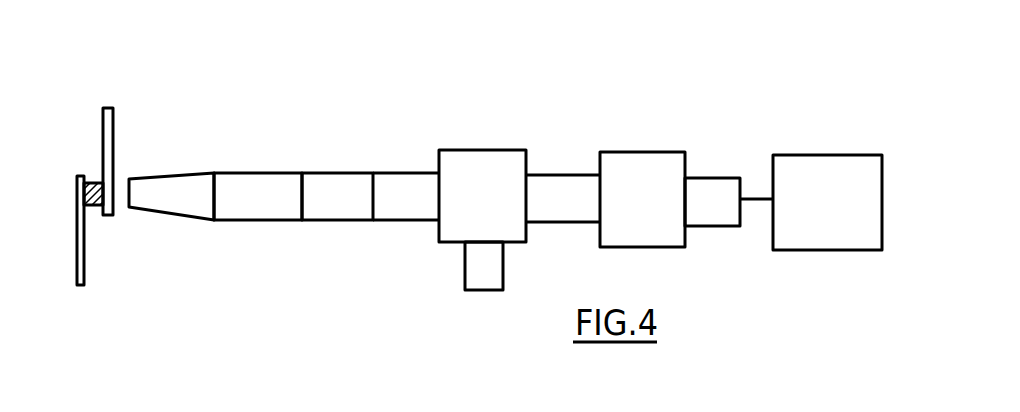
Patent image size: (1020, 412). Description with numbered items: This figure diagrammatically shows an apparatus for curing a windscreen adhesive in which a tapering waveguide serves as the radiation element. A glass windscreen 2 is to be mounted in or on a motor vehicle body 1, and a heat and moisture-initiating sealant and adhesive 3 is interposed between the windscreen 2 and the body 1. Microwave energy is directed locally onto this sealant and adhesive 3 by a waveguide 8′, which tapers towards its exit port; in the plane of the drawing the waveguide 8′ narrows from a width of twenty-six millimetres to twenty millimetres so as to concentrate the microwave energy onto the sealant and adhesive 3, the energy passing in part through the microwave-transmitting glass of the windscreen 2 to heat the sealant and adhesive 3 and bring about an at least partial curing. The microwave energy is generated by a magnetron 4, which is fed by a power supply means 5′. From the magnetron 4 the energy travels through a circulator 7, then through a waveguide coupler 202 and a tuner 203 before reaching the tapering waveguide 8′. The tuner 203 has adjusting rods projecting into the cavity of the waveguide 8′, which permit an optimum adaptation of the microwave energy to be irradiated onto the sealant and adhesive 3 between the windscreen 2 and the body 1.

The motor vehicle body 1 is at (83, 248).
The windscreen 2 is at (110, 137).
The sealant and adhesive 3 is at (93, 181).
The waveguide 8′ is at (196, 205).
The tuner 203 is at (263, 207).
The waveguide coupler 202 is at (353, 205).
The circulator 7 is at (477, 180).
The magnetron 4 is at (628, 173).
The power supply means 5′ is at (798, 185).